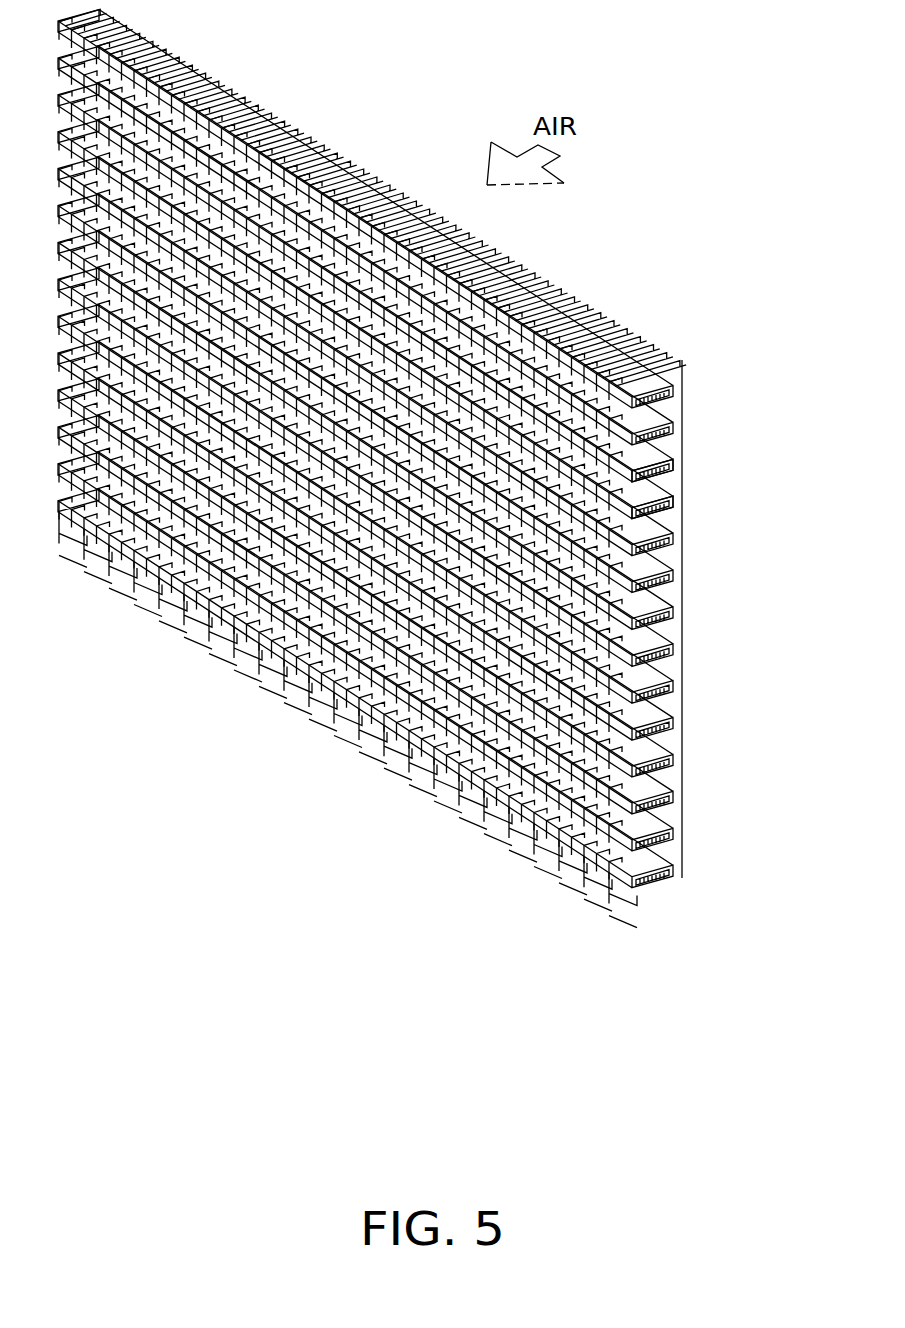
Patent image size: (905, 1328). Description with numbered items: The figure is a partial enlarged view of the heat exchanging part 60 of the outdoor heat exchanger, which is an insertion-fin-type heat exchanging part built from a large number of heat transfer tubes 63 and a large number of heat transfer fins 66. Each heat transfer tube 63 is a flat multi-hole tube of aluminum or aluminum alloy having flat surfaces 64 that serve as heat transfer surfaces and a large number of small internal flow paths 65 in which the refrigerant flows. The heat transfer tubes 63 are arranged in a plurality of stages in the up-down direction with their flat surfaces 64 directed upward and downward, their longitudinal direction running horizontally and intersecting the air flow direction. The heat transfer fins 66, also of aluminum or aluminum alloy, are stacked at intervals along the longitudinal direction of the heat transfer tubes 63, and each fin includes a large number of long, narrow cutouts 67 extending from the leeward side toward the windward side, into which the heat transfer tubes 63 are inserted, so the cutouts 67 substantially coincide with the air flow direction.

The heat exchanging part 60 is at (421, 476).
The heat transfer tube 63 is at (678, 416).
The flat surface 64 is at (652, 462).
The internal flow path 65 is at (670, 503).
The heat transfer fin 66 is at (422, 783).
The cutout 67 is at (645, 836).